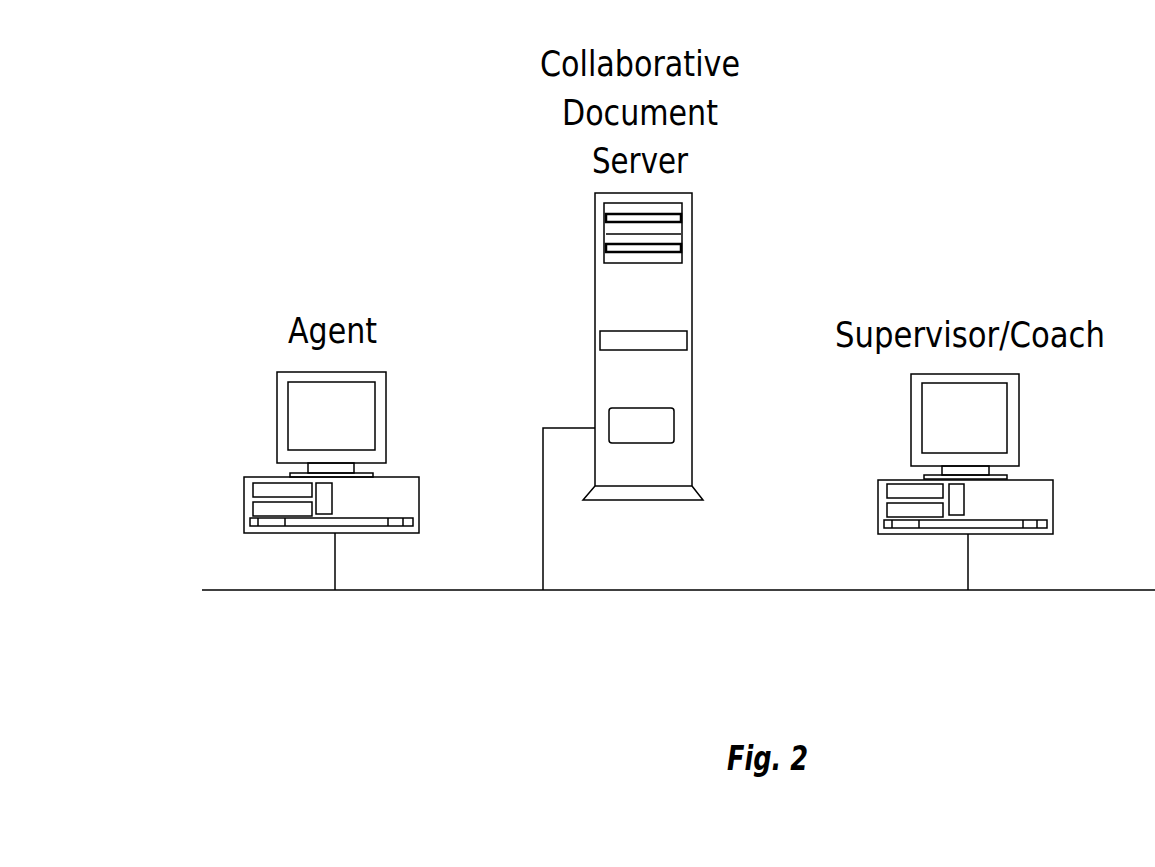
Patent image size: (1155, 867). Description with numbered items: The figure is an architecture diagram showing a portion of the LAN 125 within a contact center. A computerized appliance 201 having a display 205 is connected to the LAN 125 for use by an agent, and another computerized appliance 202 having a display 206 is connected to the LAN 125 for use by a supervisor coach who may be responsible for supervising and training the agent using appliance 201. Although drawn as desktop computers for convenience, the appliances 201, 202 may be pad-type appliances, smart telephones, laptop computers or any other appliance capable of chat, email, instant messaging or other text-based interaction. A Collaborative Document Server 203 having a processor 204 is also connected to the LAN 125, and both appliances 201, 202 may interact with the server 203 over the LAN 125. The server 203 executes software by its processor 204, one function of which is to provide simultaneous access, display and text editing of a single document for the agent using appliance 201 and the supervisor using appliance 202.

The LAN 125 is at (250, 590).
The computerized appliance 201 is at (290, 476).
The computerized appliance 202 is at (983, 482).
The Collaborative Document Server 203 is at (638, 391).
The processor 204 is at (653, 420).
The display 205 is at (315, 427).
The display 206 is at (932, 404).